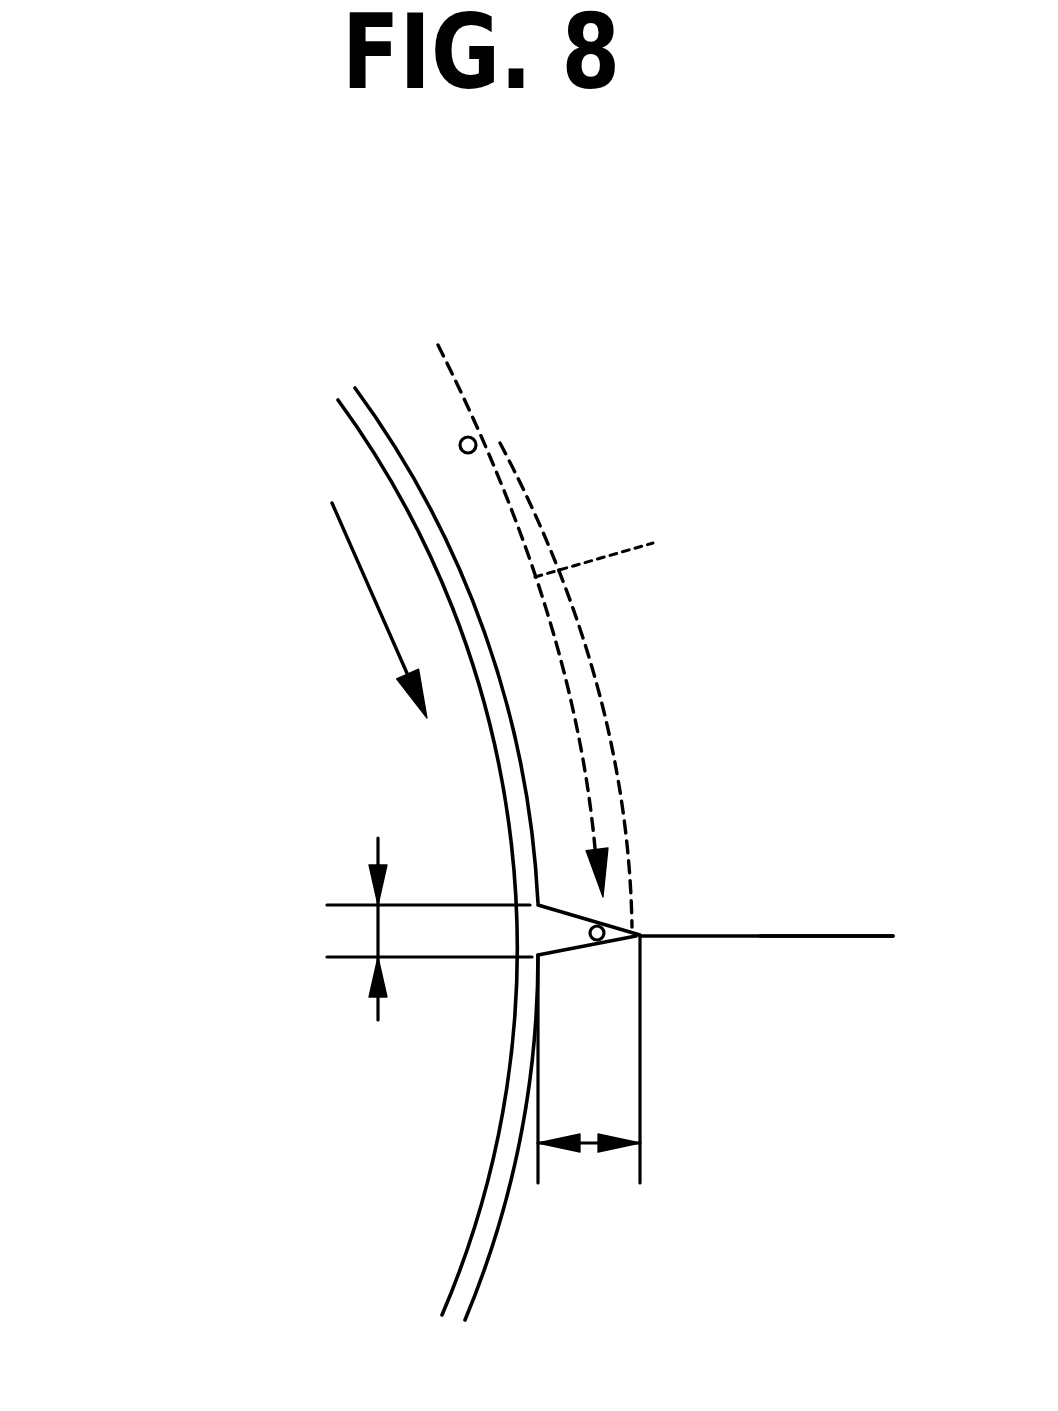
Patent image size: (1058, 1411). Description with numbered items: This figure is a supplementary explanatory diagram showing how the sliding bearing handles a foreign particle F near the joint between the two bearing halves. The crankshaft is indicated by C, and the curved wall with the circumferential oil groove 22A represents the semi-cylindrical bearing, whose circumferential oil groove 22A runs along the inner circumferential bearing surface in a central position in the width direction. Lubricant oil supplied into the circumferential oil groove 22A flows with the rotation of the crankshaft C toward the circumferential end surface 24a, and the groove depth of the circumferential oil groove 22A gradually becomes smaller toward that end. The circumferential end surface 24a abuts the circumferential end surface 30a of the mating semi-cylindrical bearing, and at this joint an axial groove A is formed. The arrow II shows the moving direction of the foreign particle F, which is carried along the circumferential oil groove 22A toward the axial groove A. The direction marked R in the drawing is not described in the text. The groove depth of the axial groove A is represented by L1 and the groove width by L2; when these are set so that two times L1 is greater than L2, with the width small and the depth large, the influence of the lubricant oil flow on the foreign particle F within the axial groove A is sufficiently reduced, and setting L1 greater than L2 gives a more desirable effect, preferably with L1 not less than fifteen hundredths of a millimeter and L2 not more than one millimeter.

The circumferential oil groove 22A is at (467, 387).
The crankshaft C is at (463, 745).
The arrow showing moving direction of foreign particle II is at (615, 547).
The foreign particle F is at (477, 437).
The radial direction R is at (367, 610).
The axial groove A is at (485, 987).
The circumferential end surface 30a is at (730, 933).
The circumferential end surface 24a is at (840, 937).
The groove width L2 is at (373, 927).
The groove depth L1 is at (588, 1157).